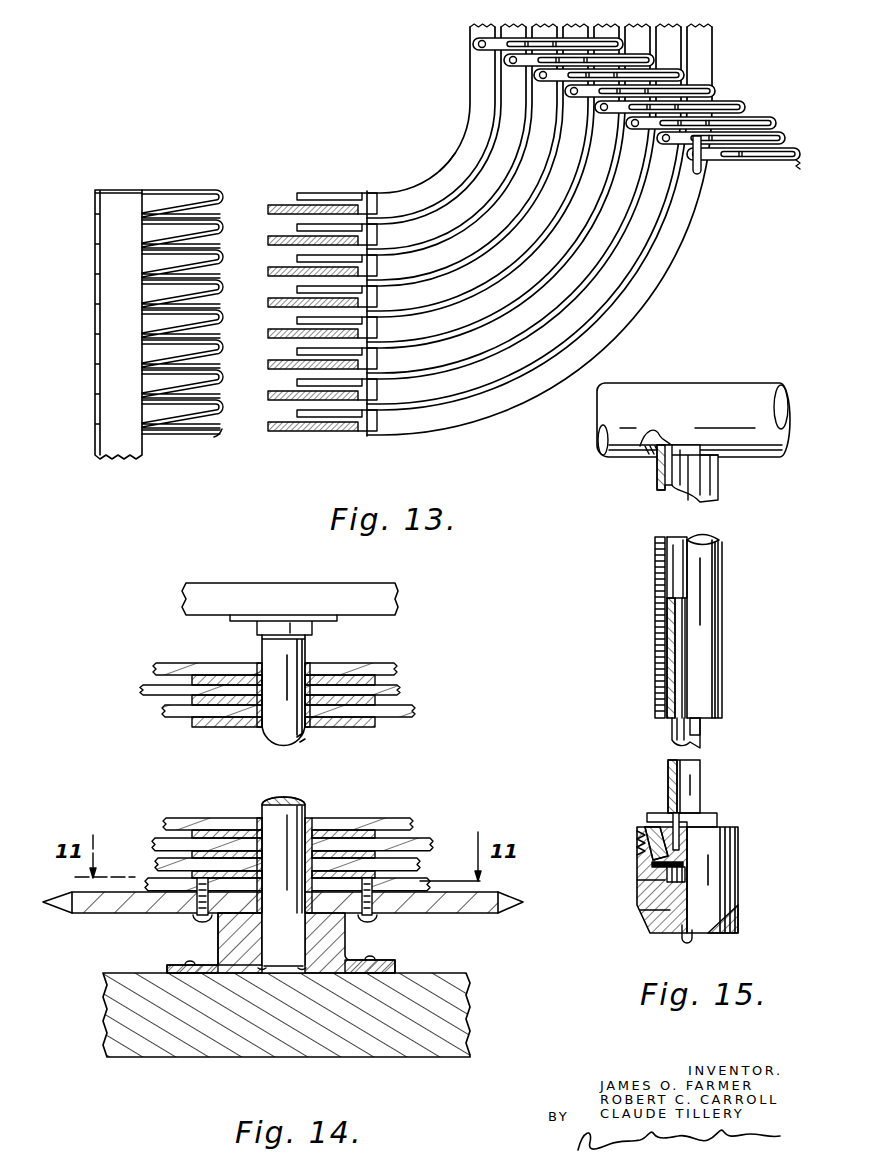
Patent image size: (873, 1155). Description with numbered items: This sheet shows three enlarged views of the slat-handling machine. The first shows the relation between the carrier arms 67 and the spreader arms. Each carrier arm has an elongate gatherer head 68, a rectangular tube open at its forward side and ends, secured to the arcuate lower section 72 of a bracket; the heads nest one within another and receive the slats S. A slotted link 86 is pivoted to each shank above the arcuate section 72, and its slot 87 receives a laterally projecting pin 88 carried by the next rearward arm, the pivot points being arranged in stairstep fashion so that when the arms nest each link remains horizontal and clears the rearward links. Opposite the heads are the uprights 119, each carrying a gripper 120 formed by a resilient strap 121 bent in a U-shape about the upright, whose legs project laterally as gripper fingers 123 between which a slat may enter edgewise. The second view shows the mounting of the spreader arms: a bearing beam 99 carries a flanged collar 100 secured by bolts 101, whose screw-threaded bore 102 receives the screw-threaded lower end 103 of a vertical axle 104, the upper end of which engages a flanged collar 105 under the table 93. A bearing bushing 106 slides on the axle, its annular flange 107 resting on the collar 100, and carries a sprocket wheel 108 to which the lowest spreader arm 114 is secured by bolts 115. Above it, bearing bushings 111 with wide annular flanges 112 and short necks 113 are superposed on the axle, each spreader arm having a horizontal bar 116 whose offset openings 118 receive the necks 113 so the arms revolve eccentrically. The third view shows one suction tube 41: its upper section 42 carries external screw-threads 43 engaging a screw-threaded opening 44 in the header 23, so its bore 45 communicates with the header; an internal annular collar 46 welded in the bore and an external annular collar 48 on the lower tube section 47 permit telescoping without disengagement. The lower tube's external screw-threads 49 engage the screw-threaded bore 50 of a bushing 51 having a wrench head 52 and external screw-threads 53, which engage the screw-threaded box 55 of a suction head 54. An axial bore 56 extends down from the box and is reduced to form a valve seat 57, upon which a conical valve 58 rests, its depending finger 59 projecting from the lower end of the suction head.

In FIG. 13, the upright 119 is at (97, 458).
In FIG. 13, the strap 121 is at (186, 196).
In FIG. 13, the gripper 120 is at (182, 436).
In FIG. 13, the gripper fingers 123 is at (216, 439).
In FIG. 13, the gatherer head 68 is at (335, 193).
In FIG. 13, the slats S is at (278, 204).
In FIG. 13, the carrier arms 67 is at (687, 221).
In FIG. 13, the arcuate lower section 72 is at (440, 171).
In FIG. 13, the slotted link 86 is at (762, 116).
In FIG. 13, the slot 87 is at (796, 166).
In FIG. 13, the pin 88 is at (698, 166).
In FIG. 14, the table 93 is at (400, 598).
In FIG. 14, the flanged collar 105 is at (310, 617).
In FIG. 14, the bar 116 is at (182, 669).
In FIG. 14, the necks 113 is at (322, 665).
In FIG. 14, the openings 118 is at (246, 727).
In FIG. 14, the annular flanges 112 is at (371, 727).
In FIG. 14, the sprocket wheel 108 is at (470, 896).
In FIG. 14, the flanged collar 100 is at (354, 948).
In FIG. 14, the annular flange 107 is at (222, 928).
In FIG. 14, the bolts 101 is at (396, 960).
In FIG. 14, the axle 104 is at (310, 805).
In FIG. 14, the bearing bushings 111 is at (380, 820).
In FIG. 14, the spreader arm 114 is at (412, 824).
In FIG. 14, the bolts 115 is at (425, 880).
In FIG. 14, the bearing bushing 106 is at (366, 920).
In FIG. 14, the bearing beam 99 is at (472, 1016).
In FIG. 14, the screw-threaded bore 102 is at (260, 968).
In FIG. 14, the screw-threaded lower end 103 is at (302, 968).
In FIG. 15, the header 23 is at (727, 390).
In FIG. 15, the screw-threaded opening 44 is at (656, 460).
In FIG. 15, the external screw-threads 43 is at (718, 458).
In FIG. 15, the internal annular collar 46 is at (660, 690).
In FIG. 15, the external annular collar 48 is at (662, 618).
In FIG. 15, the bore 45 is at (683, 535).
In FIG. 15, the upper section 42 is at (720, 618).
In FIG. 15, the suction tubes 41 is at (718, 553).
In FIG. 15, the lower tube section 47 is at (700, 735).
In FIG. 15, the external screw-threads 49 is at (668, 812).
In FIG. 15, the wrench head 52 is at (700, 817).
In FIG. 15, the suction head 54 is at (740, 850).
In FIG. 15, the screw-threaded box 55 is at (640, 830).
In FIG. 15, the bushing 51 is at (652, 848).
In FIG. 15, the screw-threaded bore 50 is at (681, 845).
In FIG. 15, the external screw-threads 53 is at (651, 867).
In FIG. 15, the axial bore 56 is at (680, 877).
In FIG. 15, the valve seat 57 is at (652, 897).
In FIG. 15, the conical valve 58 is at (655, 915).
In FIG. 15, the finger 59 is at (690, 940).